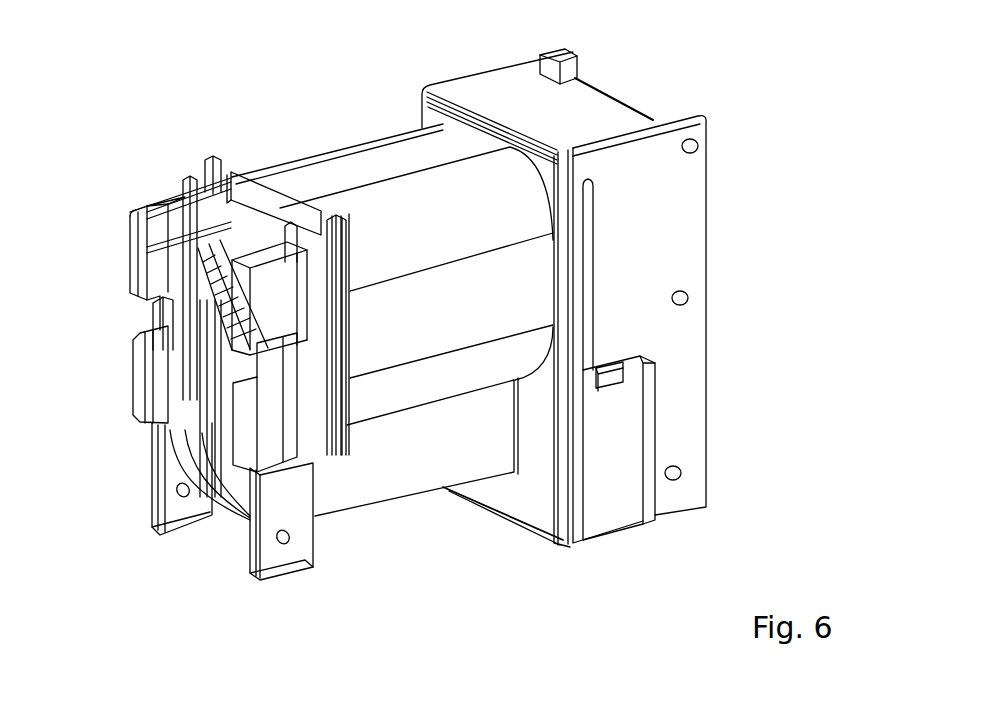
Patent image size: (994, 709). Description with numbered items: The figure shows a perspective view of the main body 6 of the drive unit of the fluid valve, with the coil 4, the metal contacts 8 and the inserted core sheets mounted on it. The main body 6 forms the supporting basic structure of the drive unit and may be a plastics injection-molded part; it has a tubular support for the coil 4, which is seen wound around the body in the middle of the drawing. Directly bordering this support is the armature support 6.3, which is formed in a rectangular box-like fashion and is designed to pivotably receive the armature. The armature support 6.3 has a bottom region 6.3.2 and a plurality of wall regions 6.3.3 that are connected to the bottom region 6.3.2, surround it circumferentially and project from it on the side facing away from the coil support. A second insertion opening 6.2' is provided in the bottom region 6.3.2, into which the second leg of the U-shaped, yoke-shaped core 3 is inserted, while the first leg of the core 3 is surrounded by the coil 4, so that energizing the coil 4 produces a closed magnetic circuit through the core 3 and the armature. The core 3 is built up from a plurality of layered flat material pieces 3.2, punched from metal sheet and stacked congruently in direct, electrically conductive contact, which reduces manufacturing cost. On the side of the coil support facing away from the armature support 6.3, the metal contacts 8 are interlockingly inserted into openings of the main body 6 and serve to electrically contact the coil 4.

The core 3 is at (160, 390).
The flat material pieces 3.2 is at (133, 330).
The coil 4 is at (357, 165).
The main body 6 is at (676, 87).
The second insertion opening 6.2' is at (416, 447).
The armature support 6.3 is at (711, 318).
The bottom region 6.3.2 is at (527, 513).
The wall regions 6.3.3 is at (689, 487).
The metal contacts 8 is at (150, 487).